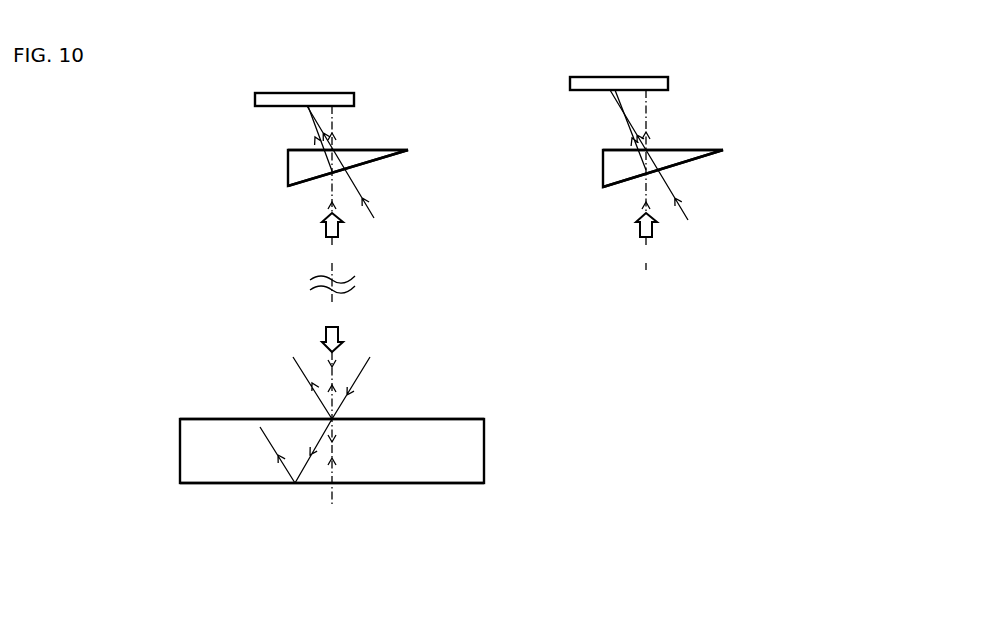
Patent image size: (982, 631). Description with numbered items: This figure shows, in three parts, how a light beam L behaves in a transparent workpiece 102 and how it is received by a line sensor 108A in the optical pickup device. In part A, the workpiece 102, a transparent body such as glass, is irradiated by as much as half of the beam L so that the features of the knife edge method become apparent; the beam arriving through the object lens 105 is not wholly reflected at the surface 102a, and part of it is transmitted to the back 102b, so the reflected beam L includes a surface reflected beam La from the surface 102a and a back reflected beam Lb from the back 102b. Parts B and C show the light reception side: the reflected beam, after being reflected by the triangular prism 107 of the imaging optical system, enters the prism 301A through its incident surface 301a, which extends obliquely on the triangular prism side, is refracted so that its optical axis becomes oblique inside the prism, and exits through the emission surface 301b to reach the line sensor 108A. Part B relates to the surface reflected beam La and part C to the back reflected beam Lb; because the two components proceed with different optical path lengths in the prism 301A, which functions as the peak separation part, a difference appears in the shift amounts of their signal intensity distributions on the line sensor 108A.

The line sensor 108A is at (354, 100).
The prism 301A is at (288, 168).
The emission surface 301b is at (380, 150).
The incident surface 301a is at (373, 167).
The triangular prism 107 is at (668, 272).
The object lens 105 is at (334, 326).
The workpiece 102 is at (484, 455).
The surface 102a is at (210, 419).
The back 102b is at (210, 483).
The surface reflected beam La is at (317, 128).
The back reflected beam Lb is at (630, 128).
The light beam L is at (352, 367).
The view A is at (585, 450).
The view B is at (182, 139).
The view C is at (802, 115).